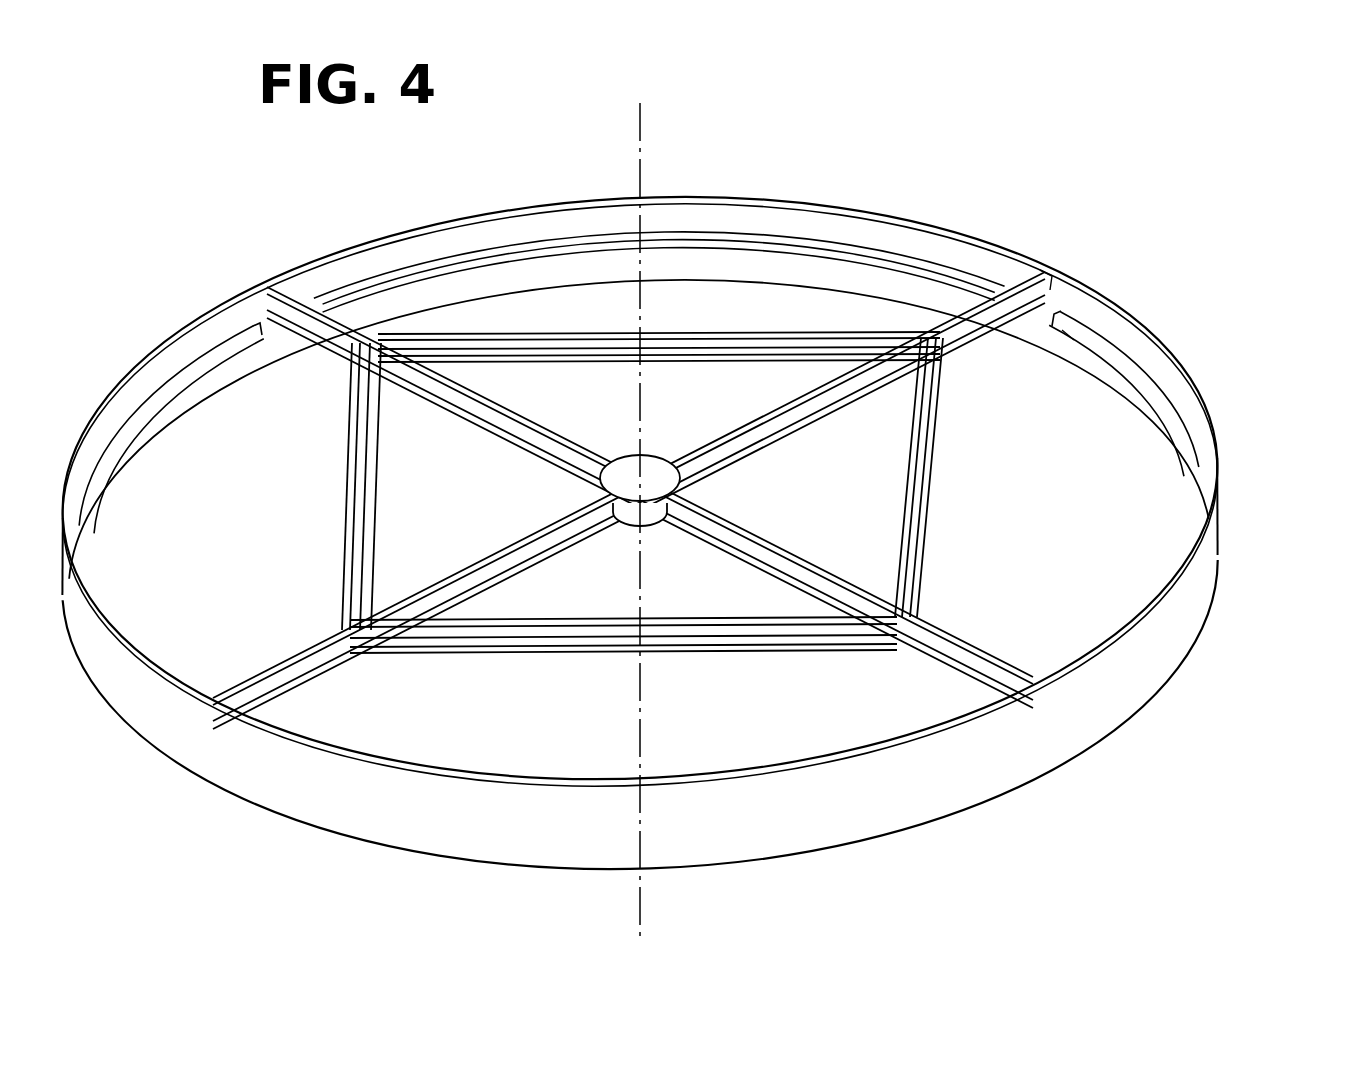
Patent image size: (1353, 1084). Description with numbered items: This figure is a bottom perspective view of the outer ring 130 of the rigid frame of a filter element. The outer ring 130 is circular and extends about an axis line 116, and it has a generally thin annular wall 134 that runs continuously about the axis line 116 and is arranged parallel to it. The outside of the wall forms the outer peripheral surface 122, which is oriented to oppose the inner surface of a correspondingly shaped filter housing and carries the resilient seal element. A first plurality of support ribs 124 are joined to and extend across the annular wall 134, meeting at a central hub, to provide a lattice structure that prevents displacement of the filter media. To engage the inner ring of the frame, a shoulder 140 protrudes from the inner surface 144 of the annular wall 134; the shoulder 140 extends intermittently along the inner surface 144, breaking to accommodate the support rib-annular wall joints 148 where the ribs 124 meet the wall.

The axis line 116 is at (640, 155).
The outer peripheral surface 122 is at (1205, 561).
The first plurality of support ribs 124 is at (808, 385).
The outer ring 130 is at (687, 506).
The annular wall 134 is at (1127, 721).
The shoulder 140 is at (1125, 358).
The inner surface 144 is at (1086, 308).
The support rib-annular wall joints 148 is at (1048, 270).